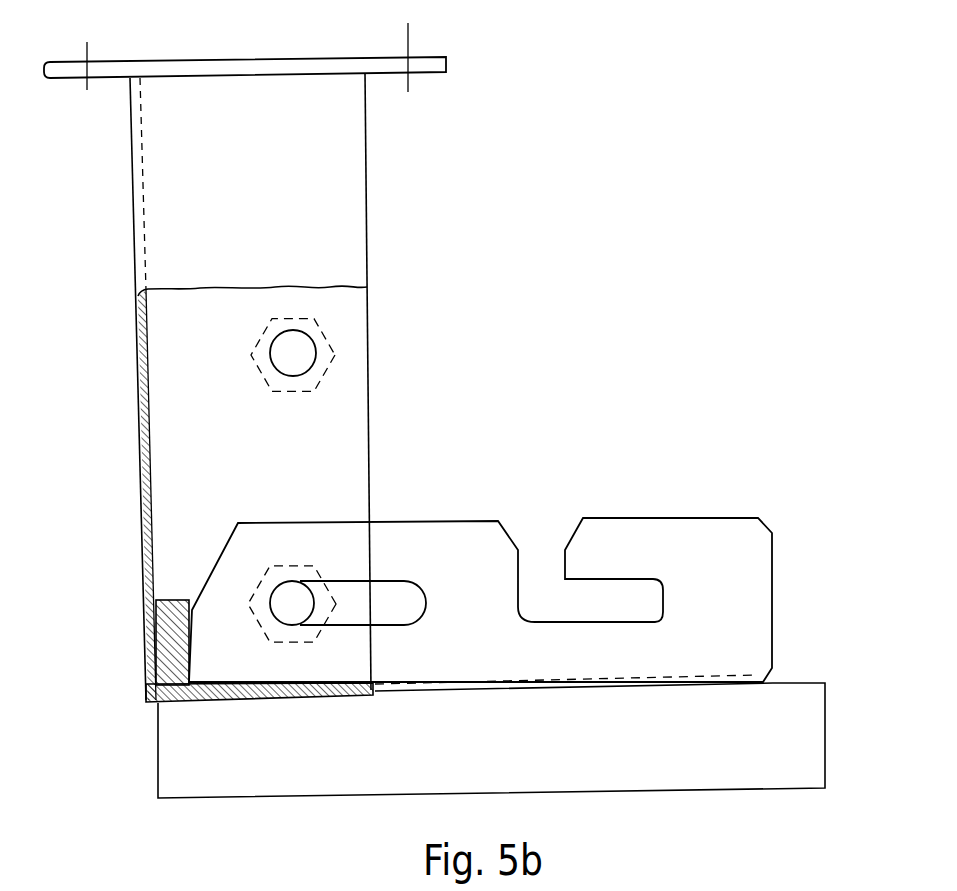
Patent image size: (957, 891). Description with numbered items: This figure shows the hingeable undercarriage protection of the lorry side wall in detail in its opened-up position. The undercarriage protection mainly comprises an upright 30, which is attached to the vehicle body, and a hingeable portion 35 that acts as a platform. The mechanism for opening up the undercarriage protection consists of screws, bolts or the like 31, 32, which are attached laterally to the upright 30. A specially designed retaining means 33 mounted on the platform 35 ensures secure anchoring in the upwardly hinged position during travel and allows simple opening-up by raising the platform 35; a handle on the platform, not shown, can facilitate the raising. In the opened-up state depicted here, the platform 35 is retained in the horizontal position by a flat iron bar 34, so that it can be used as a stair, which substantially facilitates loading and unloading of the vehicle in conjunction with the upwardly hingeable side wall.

The upright 30 is at (358, 180).
The screw or bolt 31 is at (469, 344).
The screw or bolt 32 is at (296, 588).
The retaining means 33 is at (672, 542).
The flat iron bar 34 is at (149, 612).
The hingeable portion (platform) 35 is at (758, 740).